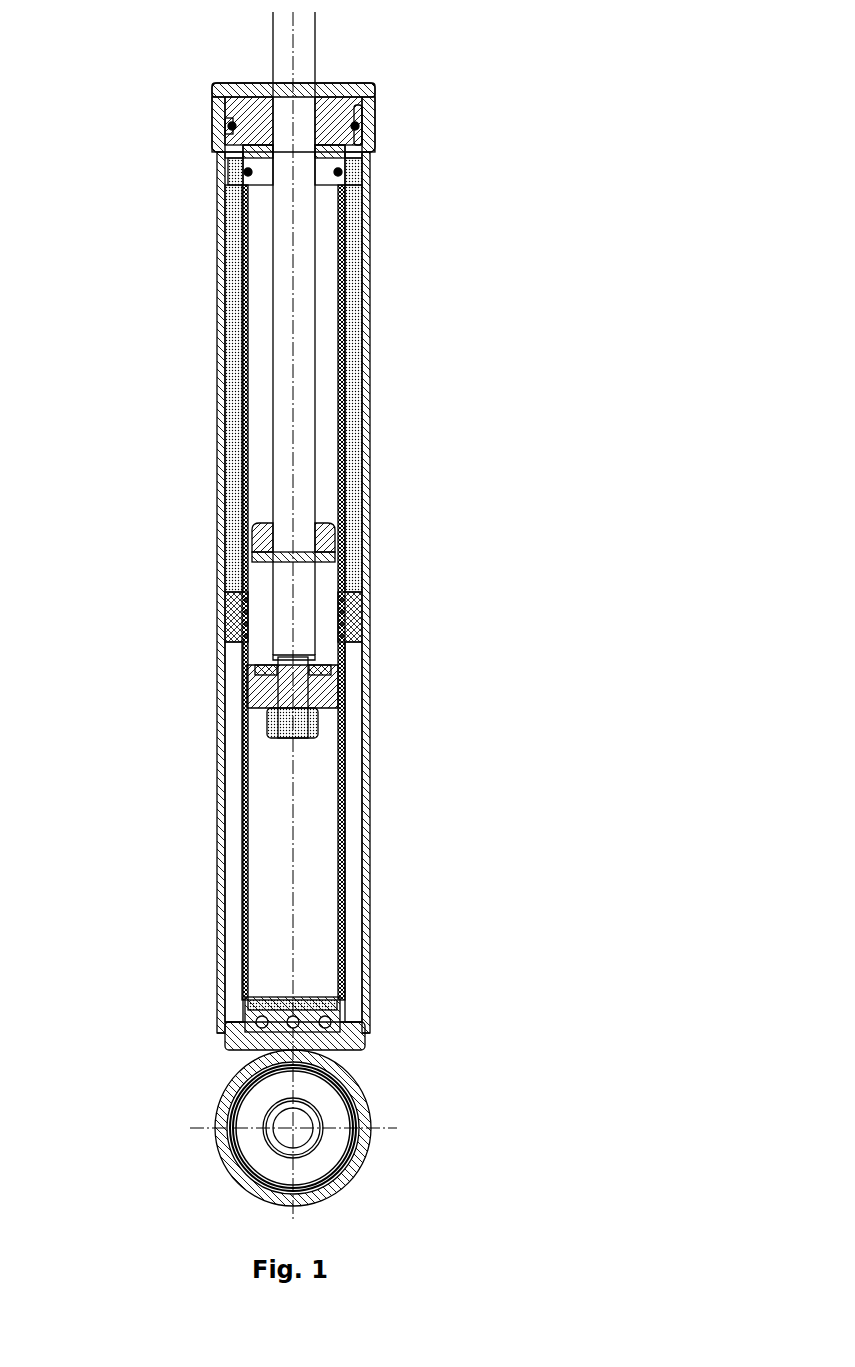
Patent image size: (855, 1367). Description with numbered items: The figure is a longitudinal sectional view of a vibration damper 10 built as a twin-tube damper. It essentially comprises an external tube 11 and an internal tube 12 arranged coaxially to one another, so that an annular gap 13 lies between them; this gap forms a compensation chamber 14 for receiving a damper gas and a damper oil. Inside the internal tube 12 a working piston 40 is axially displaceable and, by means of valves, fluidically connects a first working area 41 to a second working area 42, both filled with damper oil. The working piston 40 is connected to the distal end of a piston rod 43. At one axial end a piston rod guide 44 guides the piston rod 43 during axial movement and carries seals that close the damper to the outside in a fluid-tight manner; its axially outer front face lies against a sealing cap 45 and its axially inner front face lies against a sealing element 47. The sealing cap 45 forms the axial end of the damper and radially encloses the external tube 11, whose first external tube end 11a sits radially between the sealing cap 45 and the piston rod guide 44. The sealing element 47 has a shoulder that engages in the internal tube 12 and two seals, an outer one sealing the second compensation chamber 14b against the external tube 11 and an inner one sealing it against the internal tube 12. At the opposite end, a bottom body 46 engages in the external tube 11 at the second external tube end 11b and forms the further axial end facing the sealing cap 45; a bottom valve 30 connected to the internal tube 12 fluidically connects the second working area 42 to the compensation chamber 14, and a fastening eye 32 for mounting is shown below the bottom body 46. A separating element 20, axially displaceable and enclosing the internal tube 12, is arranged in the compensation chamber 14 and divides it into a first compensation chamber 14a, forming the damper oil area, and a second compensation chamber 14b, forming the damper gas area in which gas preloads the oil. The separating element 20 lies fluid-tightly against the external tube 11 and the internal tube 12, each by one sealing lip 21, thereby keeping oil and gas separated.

The vibration damper 10 is at (165, 120).
The external tube 11 is at (372, 308).
The first external tube end 11a is at (207, 135).
The second external tube end 11b is at (372, 1020).
The internal tube 12 is at (372, 392).
The annular gap 13 is at (372, 778).
The compensation chamber 14 is at (389, 602).
The first compensation chamber 14a is at (372, 830).
The second compensation chamber 14b is at (372, 248).
The separating element 20 is at (372, 625).
The sealing lip 21 is at (217, 636).
The bottom valve 30 is at (372, 1007).
The fastening eye 32 is at (372, 1100).
The working piston 40 is at (237, 688).
The first working area 41 is at (258, 280).
The second working area 42 is at (265, 872).
The piston rod 43 is at (316, 46).
The piston rod guide 44 is at (375, 100).
The sealing cap 45 is at (207, 88).
The bottom body 46 is at (222, 1040).
The sealing element 47 is at (375, 150).